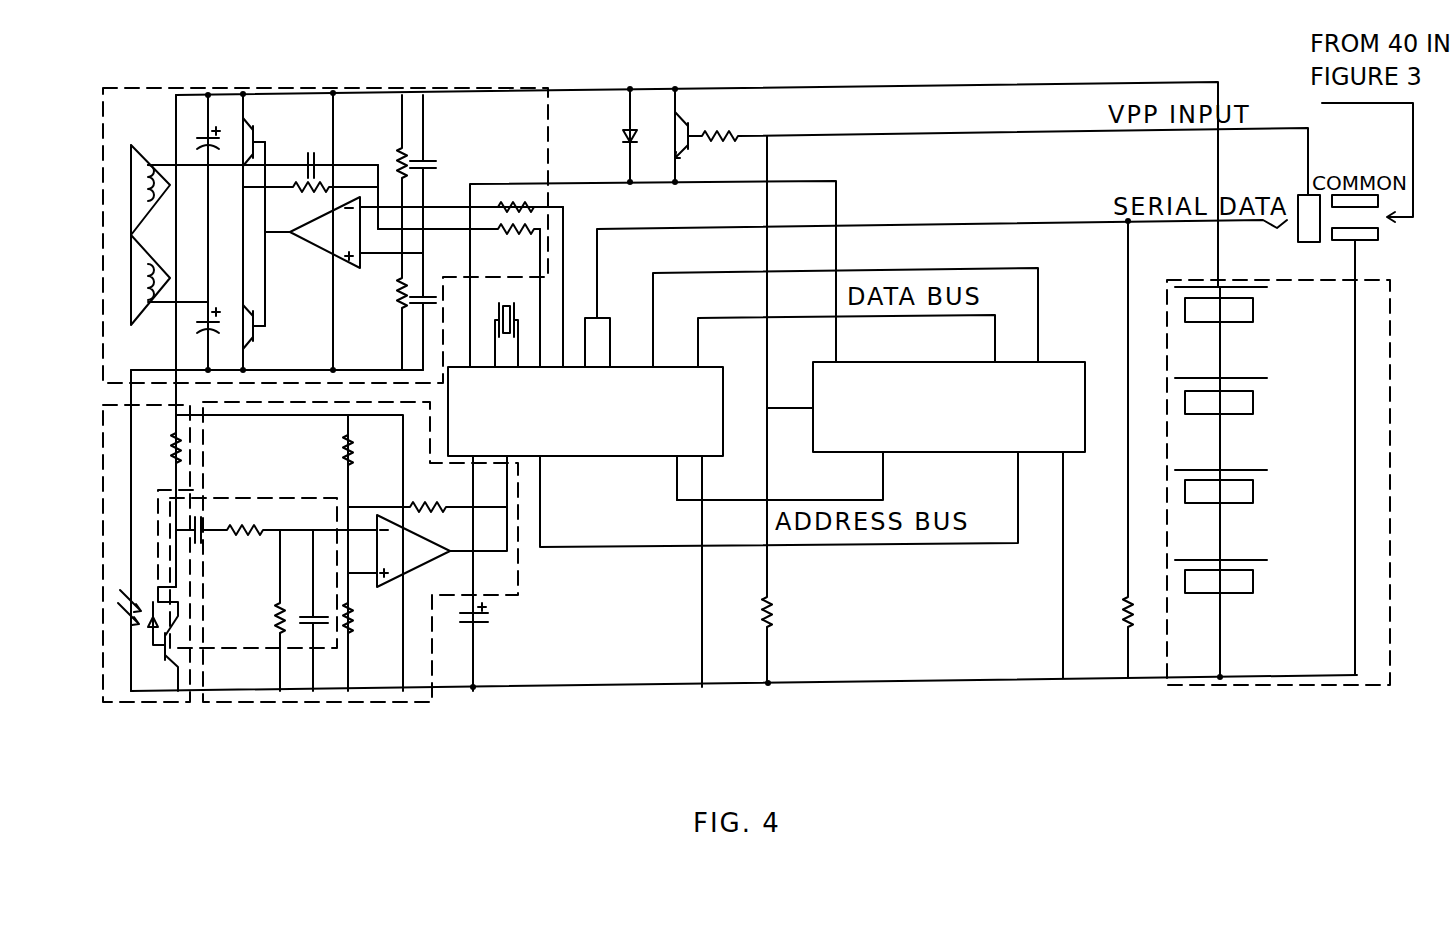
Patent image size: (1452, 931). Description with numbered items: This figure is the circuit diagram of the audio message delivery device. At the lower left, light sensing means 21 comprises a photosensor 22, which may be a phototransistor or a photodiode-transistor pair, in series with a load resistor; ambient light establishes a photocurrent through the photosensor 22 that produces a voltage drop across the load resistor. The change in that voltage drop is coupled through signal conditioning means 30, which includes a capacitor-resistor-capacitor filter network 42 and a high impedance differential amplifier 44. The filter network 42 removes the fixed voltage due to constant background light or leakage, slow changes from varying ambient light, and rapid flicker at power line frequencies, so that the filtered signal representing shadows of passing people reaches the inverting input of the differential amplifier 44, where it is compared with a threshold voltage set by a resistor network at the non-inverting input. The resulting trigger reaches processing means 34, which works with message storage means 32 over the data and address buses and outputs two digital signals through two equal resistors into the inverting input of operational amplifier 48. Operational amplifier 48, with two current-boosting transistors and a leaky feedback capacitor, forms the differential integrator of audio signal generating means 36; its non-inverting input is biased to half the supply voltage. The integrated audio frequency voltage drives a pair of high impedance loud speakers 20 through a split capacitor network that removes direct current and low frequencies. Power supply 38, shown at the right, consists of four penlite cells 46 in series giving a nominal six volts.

The loud speakers 20 is at (252, 236).
The light sensing means 21 is at (102, 555).
The photosensor 22 is at (148, 640).
The signal conditioning means 30 is at (355, 703).
The message storage means 32 is at (949, 407).
The processing means 34 is at (585, 401).
The audio signal generating means 36 is at (102, 270).
The power supply 38 is at (1390, 533).
The filter network 42 is at (253, 498).
The differential amplifier 44 is at (413, 551).
The penlite cells 46 is at (1221, 482).
The operational amplifier 48 is at (325, 232).